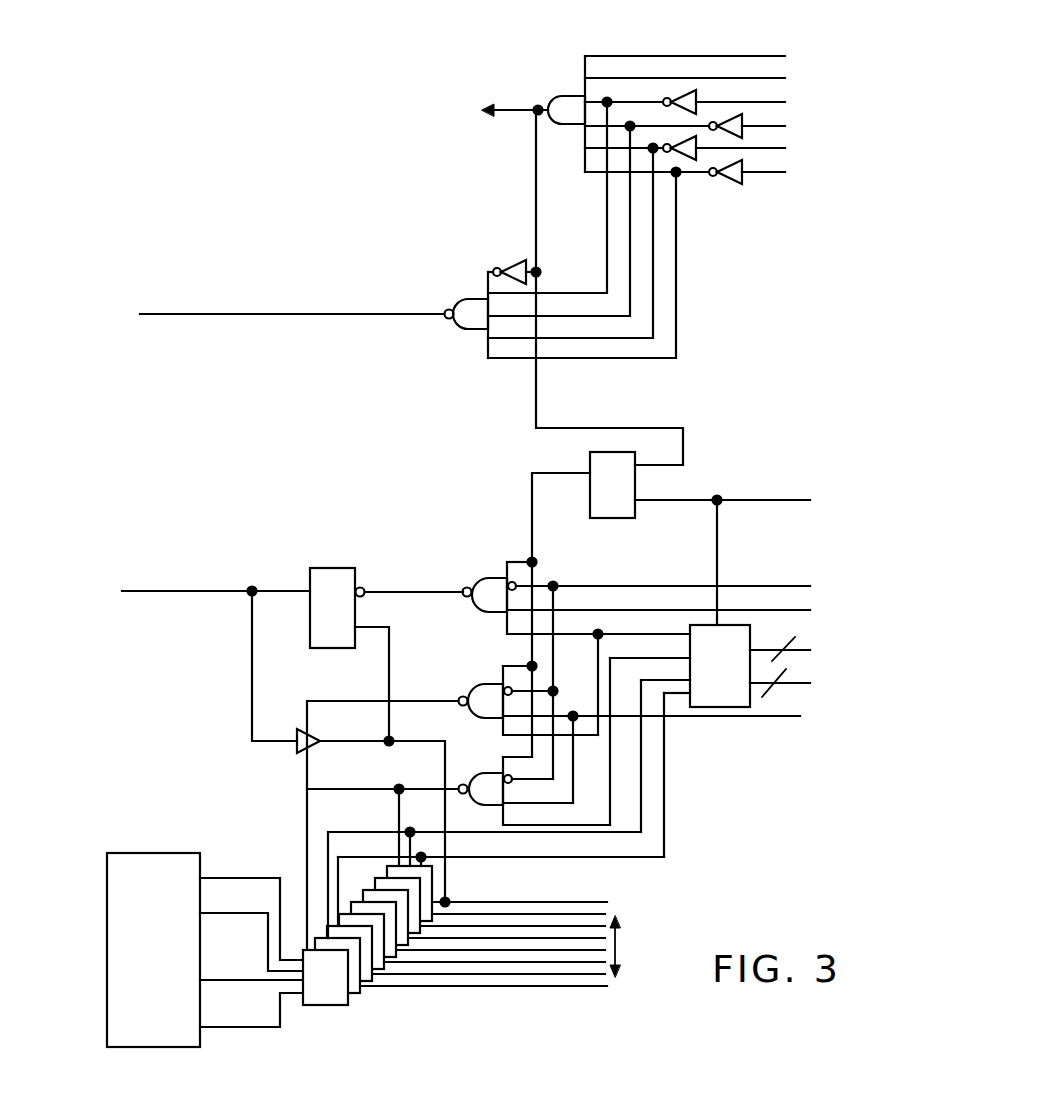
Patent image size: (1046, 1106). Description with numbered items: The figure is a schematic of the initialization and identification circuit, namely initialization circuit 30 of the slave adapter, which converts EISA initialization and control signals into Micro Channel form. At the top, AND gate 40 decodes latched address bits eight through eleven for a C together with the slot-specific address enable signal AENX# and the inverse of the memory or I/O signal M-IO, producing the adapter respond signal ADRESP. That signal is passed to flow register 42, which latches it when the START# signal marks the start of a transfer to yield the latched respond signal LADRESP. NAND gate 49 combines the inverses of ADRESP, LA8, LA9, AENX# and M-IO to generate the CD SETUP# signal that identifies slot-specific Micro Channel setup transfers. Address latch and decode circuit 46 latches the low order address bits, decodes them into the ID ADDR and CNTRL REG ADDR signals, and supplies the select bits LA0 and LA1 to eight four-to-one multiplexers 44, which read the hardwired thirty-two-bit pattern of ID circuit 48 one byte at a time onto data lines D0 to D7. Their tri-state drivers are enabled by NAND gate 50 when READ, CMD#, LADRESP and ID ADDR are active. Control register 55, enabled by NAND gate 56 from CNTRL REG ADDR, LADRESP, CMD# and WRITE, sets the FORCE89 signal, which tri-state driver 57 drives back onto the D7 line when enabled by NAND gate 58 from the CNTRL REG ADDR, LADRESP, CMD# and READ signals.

The initialization circuit 30 is at (301, 49).
The AND gate 40 is at (568, 94).
The flow register 42 is at (632, 518).
The 4-to-1 multiplexer 44 is at (325, 1005).
The address latch and decode circuit 46 is at (750, 633).
The ID circuit 48 is at (150, 853).
The NAND gate 49 is at (473, 300).
The NAND gate 50 is at (498, 773).
The control register 55 is at (330, 568).
The NAND gate 56 is at (494, 580).
The tri-state driver 57 is at (308, 753).
The NAND gate 58 is at (494, 685).